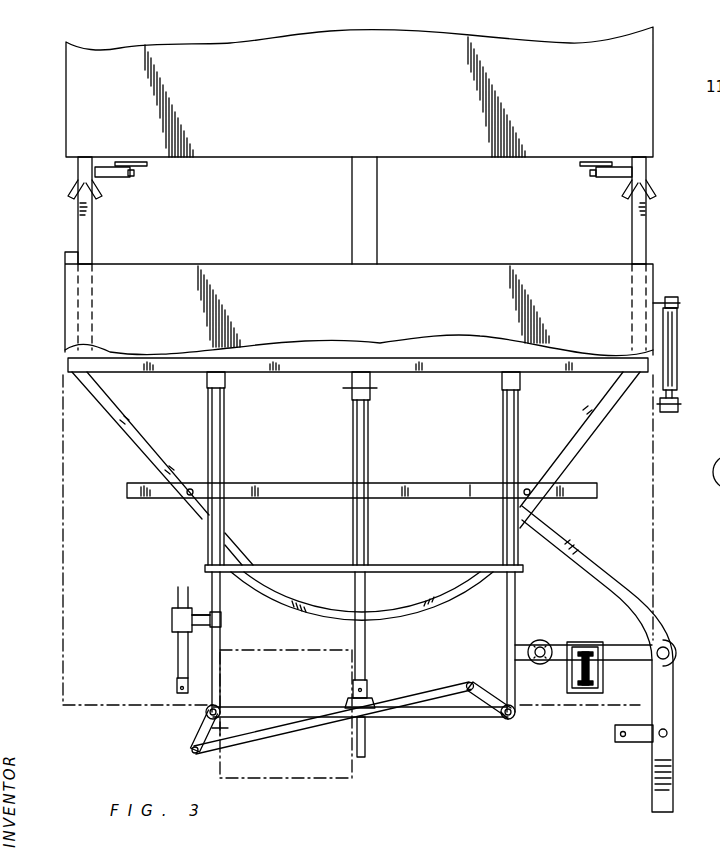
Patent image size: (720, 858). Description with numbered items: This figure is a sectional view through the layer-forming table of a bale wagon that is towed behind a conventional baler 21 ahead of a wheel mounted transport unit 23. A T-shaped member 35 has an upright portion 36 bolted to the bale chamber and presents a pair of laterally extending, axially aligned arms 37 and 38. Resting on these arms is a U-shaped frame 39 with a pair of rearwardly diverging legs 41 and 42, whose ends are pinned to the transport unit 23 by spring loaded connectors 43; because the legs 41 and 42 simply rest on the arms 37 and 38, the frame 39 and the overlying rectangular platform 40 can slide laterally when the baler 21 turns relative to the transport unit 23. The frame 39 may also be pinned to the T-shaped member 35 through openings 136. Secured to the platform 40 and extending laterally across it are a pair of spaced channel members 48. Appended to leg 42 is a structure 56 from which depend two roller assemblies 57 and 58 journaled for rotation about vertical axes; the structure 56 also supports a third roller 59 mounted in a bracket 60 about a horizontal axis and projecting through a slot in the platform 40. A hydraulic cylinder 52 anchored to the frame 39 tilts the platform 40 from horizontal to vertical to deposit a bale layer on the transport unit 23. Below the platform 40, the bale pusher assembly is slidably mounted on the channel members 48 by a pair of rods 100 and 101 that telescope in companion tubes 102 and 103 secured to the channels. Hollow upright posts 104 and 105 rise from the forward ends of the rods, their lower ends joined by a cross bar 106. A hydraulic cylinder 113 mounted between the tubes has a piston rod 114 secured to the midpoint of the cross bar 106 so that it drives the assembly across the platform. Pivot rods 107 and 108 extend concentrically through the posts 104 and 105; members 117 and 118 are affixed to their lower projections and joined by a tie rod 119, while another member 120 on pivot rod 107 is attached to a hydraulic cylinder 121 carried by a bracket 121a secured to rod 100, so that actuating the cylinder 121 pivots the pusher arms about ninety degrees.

The baler 21 is at (352, 778).
The wheel mounted transport unit 23 is at (338, 131).
The T-shaped member 35 is at (380, 590).
The upright portion 36 is at (367, 749).
The arm 37 is at (283, 495).
The arm 38 is at (438, 493).
The frame 39 is at (580, 450).
The rectangular platform 40 is at (88, 525).
The leg 41 is at (150, 442).
The leg 42 is at (555, 468).
The spring loaded connector 43 is at (134, 171).
The channel member 48 is at (460, 343).
The hydraulic cylinder 52 is at (670, 366).
The structure 56 is at (598, 566).
The roller assembly 57 is at (545, 641).
The roller assembly 58 is at (675, 655).
The third roller 59 is at (599, 675).
The bracket 60 is at (597, 698).
The rod 100 is at (220, 640).
The rod 101 is at (517, 605).
The tube 102 is at (217, 440).
The tube 103 is at (515, 425).
The upright post 104 is at (206, 720).
The upright post 105 is at (508, 720).
The cross bar 106 is at (300, 713).
The pivot rod 107 is at (222, 704).
The pivot rod 108 is at (516, 714).
The hydraulic cylinder 113 is at (368, 450).
The piston rod 114 is at (366, 640).
The member 117 is at (235, 729).
The member 118 is at (492, 683).
The tie rod 119 is at (274, 740).
The member 120 is at (190, 694).
The hydraulic cylinder 121 is at (176, 650).
The bracket 121a is at (200, 608).
The opening 136 is at (191, 488).